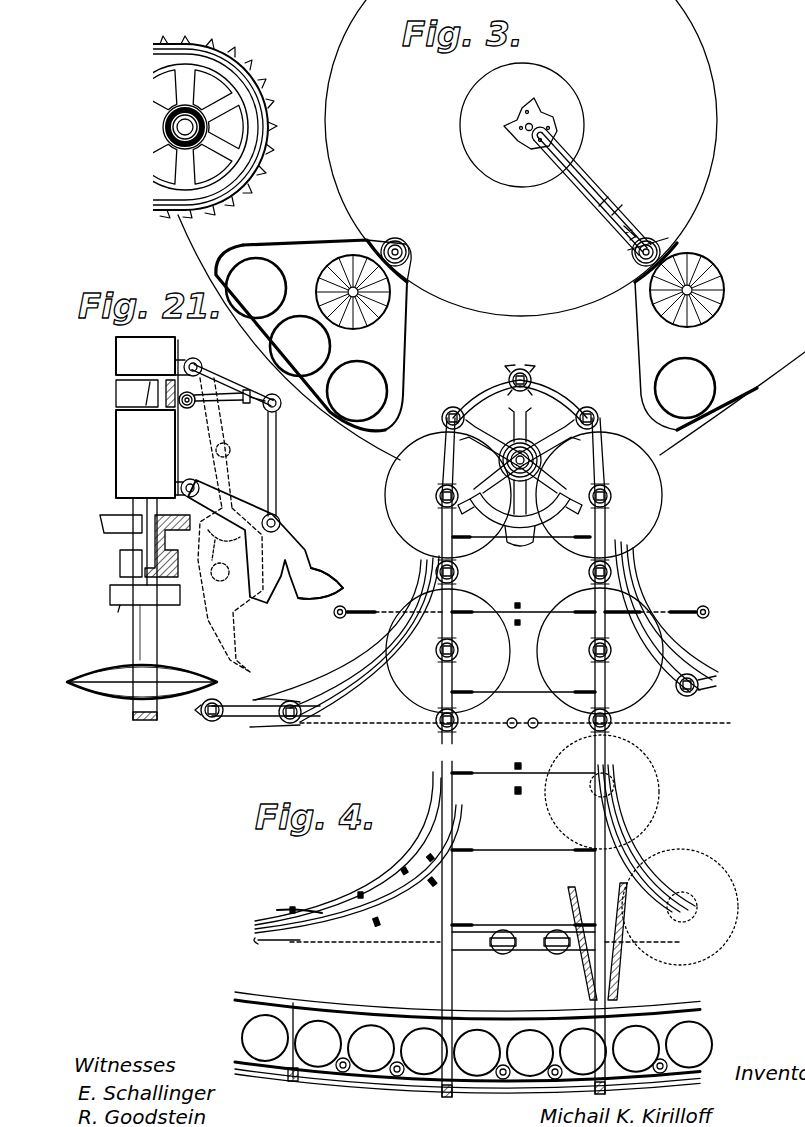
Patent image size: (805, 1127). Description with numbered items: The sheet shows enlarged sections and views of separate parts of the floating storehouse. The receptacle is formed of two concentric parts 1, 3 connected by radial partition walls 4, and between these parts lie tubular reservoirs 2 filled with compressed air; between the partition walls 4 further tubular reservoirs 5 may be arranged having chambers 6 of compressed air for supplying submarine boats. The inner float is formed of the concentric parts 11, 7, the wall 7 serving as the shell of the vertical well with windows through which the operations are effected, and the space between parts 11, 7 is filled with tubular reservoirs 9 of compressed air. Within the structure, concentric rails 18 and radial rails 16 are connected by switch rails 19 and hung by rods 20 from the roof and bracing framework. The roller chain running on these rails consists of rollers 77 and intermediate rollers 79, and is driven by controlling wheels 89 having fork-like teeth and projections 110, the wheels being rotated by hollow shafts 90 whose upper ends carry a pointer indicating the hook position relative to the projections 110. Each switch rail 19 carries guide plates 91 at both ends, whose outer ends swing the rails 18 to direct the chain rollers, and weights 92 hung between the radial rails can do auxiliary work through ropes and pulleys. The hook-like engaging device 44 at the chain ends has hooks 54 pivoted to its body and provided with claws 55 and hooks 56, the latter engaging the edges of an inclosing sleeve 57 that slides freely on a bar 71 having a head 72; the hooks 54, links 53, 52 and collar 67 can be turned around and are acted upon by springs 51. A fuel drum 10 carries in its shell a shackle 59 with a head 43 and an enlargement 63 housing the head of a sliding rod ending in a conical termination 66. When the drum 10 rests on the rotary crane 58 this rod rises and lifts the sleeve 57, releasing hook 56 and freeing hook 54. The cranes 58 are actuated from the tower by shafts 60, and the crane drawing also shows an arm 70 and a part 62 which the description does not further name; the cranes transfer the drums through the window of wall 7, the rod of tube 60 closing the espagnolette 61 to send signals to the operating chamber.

In FIG. 4, the concentric part 1 is at (467, 1041).
In FIG. 4, the tubular reservoir 2 is at (628, 1072).
In FIG. 4, the concentric part 3 is at (480, 1086).
In FIG. 4, the radial partition wall 4 is at (605, 871).
In FIG. 4, the tubular reservoir 5 is at (398, 1078).
In FIG. 4, the chamber 6 is at (343, 1075).
In FIG. 3, the wall of the well 7 is at (409, 285).
In FIG. 3, the tubular reservoir 9 is at (232, 292).
In FIG. 3, the drum 10 is at (583, 125).
In FIG. 4, the drum 10 is at (387, 497).
In FIG. 3, the concentric part 11 is at (320, 410).
In FIG. 3, the radial rail 16 is at (262, 136).
In FIG. 4, the radial rail 16 is at (478, 384).
In FIG. 4, the concentric rail 18 is at (268, 922).
In FIG. 4, the switch rail 19 is at (322, 692).
In FIG. 4, the rod 20 is at (521, 609).
In FIG. 21, the head 43 is at (118, 603).
In FIG. 21, the hook-like engaging device 44 is at (116, 358).
In FIG. 21, the spring 51 is at (222, 407).
In FIG. 21, the link 52 is at (240, 382).
In FIG. 21, the link 53 is at (268, 447).
In FIG. 21, the hook 54 is at (302, 552).
In FIG. 21, the claw 55 is at (322, 586).
In FIG. 21, the hook 56 is at (270, 560).
In FIG. 21, the inclosing sleeve 57 is at (102, 525).
In FIG. 3, the rotary crane 58 is at (532, 110).
In FIG. 21, the shackle 59 is at (140, 640).
In FIG. 3, the shaft 60 is at (409, 249).
In FIG. 3, the espagnolette 61 is at (522, 126).
In FIG. 3, the coupling 62 is at (624, 228).
In FIG. 21, the enlargement 63 is at (120, 674).
In FIG. 21, the conical termination 66 is at (112, 585).
In FIG. 21, the collar 67 is at (116, 392).
In FIG. 3, the arm 70 is at (585, 195).
In FIG. 21, the bar 71 is at (133, 505).
In FIG. 21, the head 72 is at (120, 554).
In FIG. 4, the roller 77 is at (534, 376).
In FIG. 4, the intermediate roller 79 is at (446, 412).
In FIG. 3, the controlling wheel 89 is at (250, 118).
In FIG. 4, the controlling wheel 89 is at (542, 541).
In FIG. 3, the hollow shaft 90 is at (200, 127).
In FIG. 4, the hollow shaft 90 is at (531, 445).
In FIG. 4, the guide plate 91 is at (371, 661).
In FIG. 4, the weight 92 is at (507, 930).
In FIG. 3, the projection 110 is at (185, 80).
In FIG. 4, the projection 110 is at (499, 505).